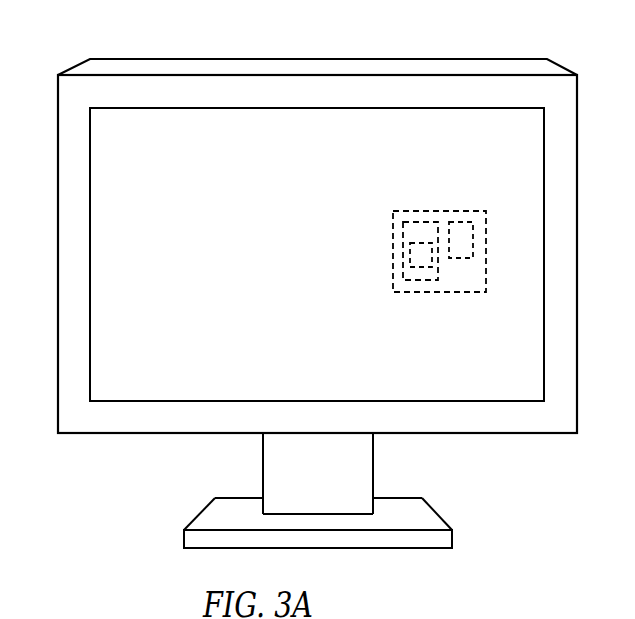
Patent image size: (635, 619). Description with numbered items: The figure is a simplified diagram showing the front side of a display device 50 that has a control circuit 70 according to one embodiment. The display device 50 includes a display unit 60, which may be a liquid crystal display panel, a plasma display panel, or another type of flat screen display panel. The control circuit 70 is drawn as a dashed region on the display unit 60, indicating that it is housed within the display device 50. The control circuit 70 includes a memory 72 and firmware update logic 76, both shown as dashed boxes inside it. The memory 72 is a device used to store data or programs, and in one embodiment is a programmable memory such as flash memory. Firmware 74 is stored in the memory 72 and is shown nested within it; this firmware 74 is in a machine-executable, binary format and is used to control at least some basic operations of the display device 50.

The display device 50 is at (106, 429).
The display unit 60 is at (173, 402).
The control circuit 70 is at (394, 209).
The memory 72 is at (428, 222).
The firmware 74 is at (427, 267).
The firmware update logic 76 is at (460, 222).